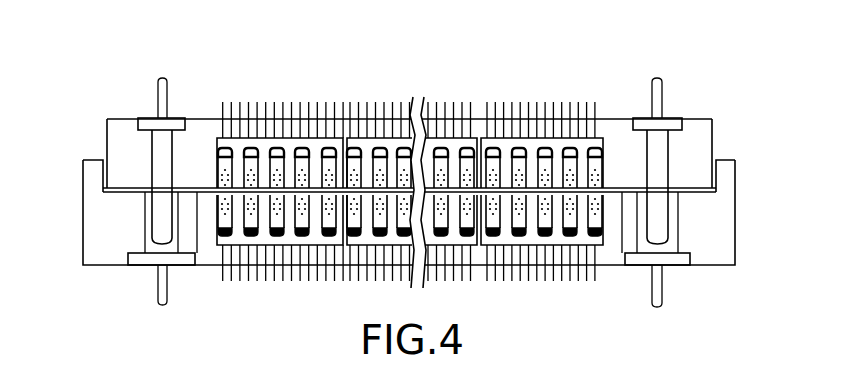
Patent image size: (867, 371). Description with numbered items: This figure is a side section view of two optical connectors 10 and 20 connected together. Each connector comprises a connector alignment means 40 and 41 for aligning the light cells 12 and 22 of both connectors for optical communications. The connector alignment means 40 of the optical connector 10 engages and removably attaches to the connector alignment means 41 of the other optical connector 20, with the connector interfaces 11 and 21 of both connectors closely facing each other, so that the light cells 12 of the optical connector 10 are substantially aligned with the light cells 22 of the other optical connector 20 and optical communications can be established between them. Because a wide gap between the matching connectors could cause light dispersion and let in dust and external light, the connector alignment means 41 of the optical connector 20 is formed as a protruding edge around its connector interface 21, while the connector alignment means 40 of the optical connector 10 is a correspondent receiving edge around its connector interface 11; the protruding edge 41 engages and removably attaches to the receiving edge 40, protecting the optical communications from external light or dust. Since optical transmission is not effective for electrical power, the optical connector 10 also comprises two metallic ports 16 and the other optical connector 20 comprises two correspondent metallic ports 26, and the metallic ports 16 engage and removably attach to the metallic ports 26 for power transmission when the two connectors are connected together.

The optical connector 10 is at (117, 115).
The connector interface 11 is at (614, 192).
The light cells 12 is at (215, 163).
The metallic ports 16 is at (148, 116).
The optical connector 20 is at (82, 268).
The connector interface 21 is at (614, 192).
The light cells 22 is at (213, 220).
The metallic ports 26 is at (148, 267).
The connector alignment means 40 is at (123, 167).
The connector alignment means 41 is at (88, 178).